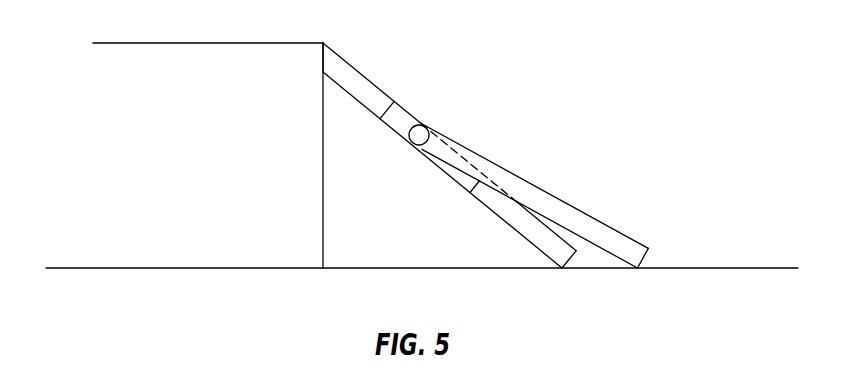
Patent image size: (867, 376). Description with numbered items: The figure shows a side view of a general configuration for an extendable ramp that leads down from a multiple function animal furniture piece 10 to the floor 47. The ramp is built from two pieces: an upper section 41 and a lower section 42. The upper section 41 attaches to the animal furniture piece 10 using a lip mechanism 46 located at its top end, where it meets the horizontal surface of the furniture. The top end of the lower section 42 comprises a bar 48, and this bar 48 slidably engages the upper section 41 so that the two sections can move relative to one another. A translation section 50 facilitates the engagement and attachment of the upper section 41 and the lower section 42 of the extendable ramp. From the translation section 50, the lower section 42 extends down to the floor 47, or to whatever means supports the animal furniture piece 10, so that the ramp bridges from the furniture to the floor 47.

The support structure 10 is at (139, 43).
The lip mechanism 46 is at (325, 42).
The upper section 41 is at (358, 71).
The translation section 50 is at (412, 126).
The bar 48 is at (412, 143).
The lower section 42 is at (535, 186).
The floor 47 is at (727, 268).